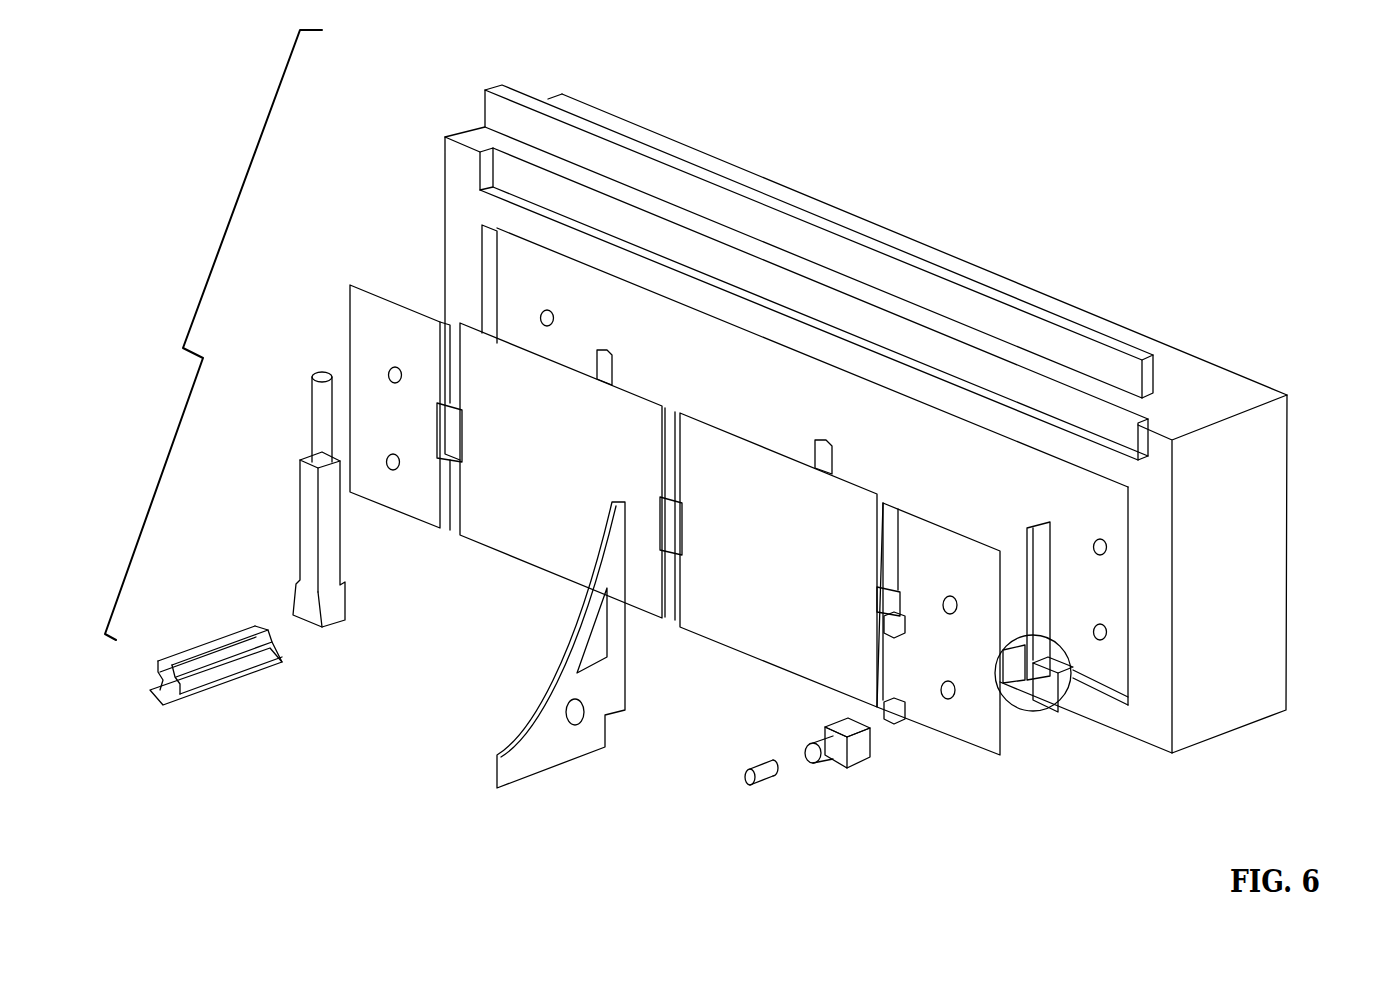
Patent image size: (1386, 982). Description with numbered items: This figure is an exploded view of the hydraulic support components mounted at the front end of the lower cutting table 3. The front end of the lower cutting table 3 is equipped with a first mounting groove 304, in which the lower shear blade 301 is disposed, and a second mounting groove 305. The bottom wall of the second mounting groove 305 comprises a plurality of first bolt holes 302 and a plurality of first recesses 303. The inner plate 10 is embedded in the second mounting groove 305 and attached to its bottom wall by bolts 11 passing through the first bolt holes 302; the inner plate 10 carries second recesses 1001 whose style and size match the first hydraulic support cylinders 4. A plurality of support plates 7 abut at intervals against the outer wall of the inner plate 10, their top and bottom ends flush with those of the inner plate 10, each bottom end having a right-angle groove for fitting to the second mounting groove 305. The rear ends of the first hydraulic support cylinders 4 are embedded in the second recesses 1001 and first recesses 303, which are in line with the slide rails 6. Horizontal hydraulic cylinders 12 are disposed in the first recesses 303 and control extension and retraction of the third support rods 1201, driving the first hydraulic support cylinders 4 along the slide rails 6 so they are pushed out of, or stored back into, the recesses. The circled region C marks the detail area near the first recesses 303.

The lower cutting table 3 is at (1197, 462).
The lower shear blade 301 is at (1058, 348).
The first bolt hole 302 is at (956, 603).
The first recess 303 is at (1040, 618).
The first mounting groove 304 is at (1097, 428).
The second mounting groove 305 is at (553, 297).
The first hydraulic support cylinder 4 is at (310, 515).
The slide rail 6 is at (215, 680).
The support plate 7 is at (552, 747).
The inner plate 10 is at (385, 390).
The second recess 1001 is at (455, 358).
The bolt 11 is at (898, 628).
The horizontal hydraulic cylinder 12 is at (860, 745).
The third support rod 1201 is at (770, 777).
The detail region C is at (1075, 677).